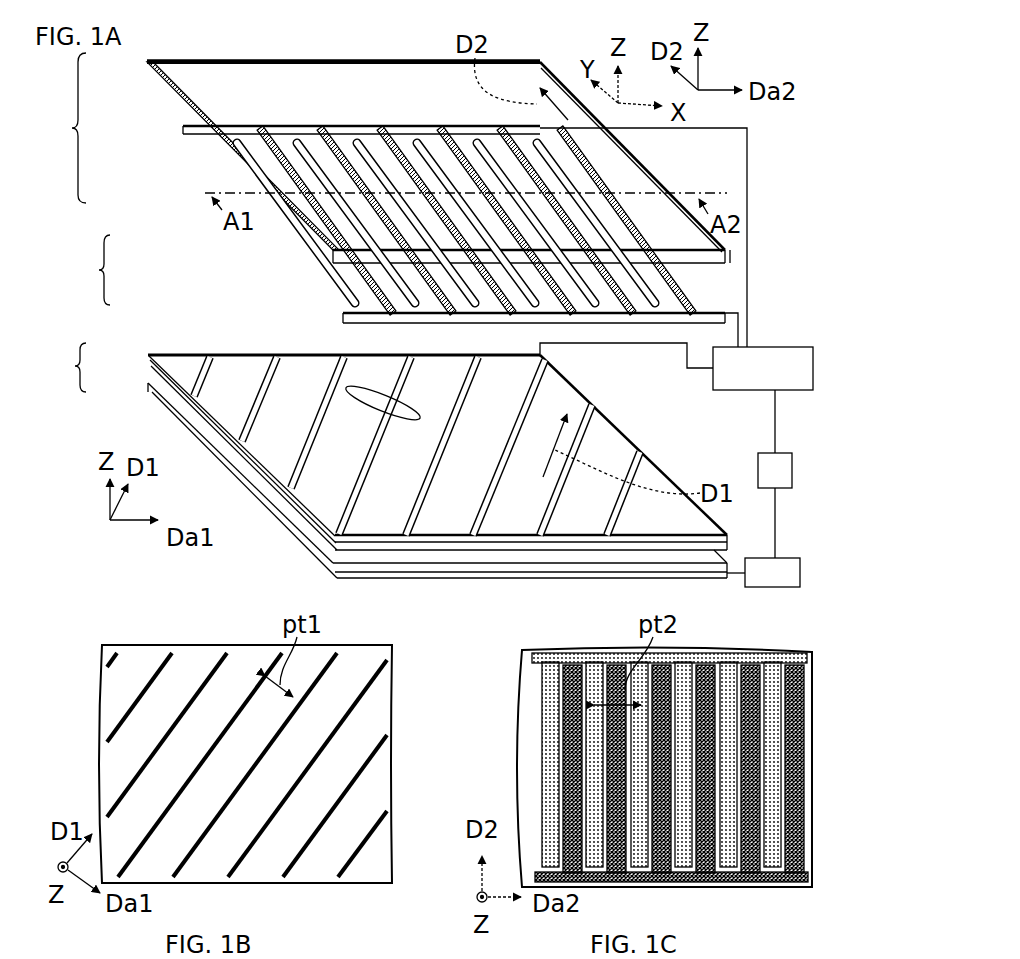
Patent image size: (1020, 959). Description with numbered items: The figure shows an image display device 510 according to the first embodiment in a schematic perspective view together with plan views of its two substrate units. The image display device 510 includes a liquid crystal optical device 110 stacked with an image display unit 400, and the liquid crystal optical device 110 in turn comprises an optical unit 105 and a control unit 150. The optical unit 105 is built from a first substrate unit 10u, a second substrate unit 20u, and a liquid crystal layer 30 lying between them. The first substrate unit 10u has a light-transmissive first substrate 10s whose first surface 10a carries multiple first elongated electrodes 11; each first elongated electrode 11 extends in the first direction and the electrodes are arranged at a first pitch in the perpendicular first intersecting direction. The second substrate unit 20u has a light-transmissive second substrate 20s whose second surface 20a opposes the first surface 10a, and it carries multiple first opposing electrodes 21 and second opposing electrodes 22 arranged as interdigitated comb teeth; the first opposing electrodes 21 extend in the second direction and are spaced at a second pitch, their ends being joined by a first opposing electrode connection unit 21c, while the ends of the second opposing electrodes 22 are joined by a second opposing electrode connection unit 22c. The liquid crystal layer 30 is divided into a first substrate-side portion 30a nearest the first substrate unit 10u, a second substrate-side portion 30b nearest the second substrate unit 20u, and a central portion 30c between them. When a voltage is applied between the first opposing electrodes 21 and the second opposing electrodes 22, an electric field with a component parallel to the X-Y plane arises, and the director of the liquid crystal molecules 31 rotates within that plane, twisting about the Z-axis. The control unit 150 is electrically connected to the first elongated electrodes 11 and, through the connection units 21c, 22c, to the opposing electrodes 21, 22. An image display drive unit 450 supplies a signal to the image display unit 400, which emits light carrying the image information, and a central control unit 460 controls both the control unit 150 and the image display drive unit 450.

In FIG. 1A, the first surface 10a is at (613, 452).
In FIG. 1A, the first substrate 10s is at (183, 400).
In FIG. 1B, the first substrate 10s is at (102, 712).
In FIG. 1A, the first substrate unit 10u is at (60, 367).
In FIG. 1B, the first substrate unit 10u is at (313, 863).
In FIG. 1A, the first elongated electrode 11 is at (253, 390).
In FIG. 1B, the first elongated electrode 11 is at (340, 718).
In FIG. 1A, the second surface 20a is at (182, 106).
In FIG. 1A, the second substrate 20s is at (148, 74).
In FIG. 1C, the second substrate 20s is at (520, 708).
In FIG. 1A, the second substrate unit 20u is at (59, 128).
In FIG. 1C, the second substrate unit 20u is at (743, 880).
In FIG. 1A, the first opposing electrode 21 is at (255, 150).
In FIG. 1C, the first opposing electrode 21 is at (778, 715).
In FIG. 1A, the first opposing electrode connection unit 21c is at (183, 128).
In FIG. 1C, the first opposing electrode connection unit 21c is at (807, 658).
In FIG. 1A, the second opposing electrode 22 is at (317, 175).
In FIG. 1C, the second opposing electrode 22 is at (797, 828).
In FIG. 1A, the second opposing electrode connection unit 22c is at (343, 317).
In FIG. 1C, the second opposing electrode connection unit 22c is at (808, 876).
In FIG. 1A, the liquid crystal layer 30 is at (91, 270).
In FIG. 1A, the first substrate-side portion 30a is at (205, 316).
In FIG. 1A, the second substrate-side portion 30b is at (205, 249).
In FIG. 1A, the central portion 30c is at (207, 275).
In FIG. 1A, the liquid crystal molecule 31 is at (398, 416).
In FIG. 1A, the optical unit 105 is at (680, 174).
In FIG. 1A, the liquid crystal optical device 110 is at (786, 170).
In FIG. 1A, the control unit 150 is at (803, 347).
In FIG. 1A, the image display unit 400 is at (305, 543).
In FIG. 1A, the image display drive unit 450 is at (790, 558).
In FIG. 1A, the central control unit 460 is at (786, 453).
In FIG. 1A, the image display device 510 is at (780, 270).